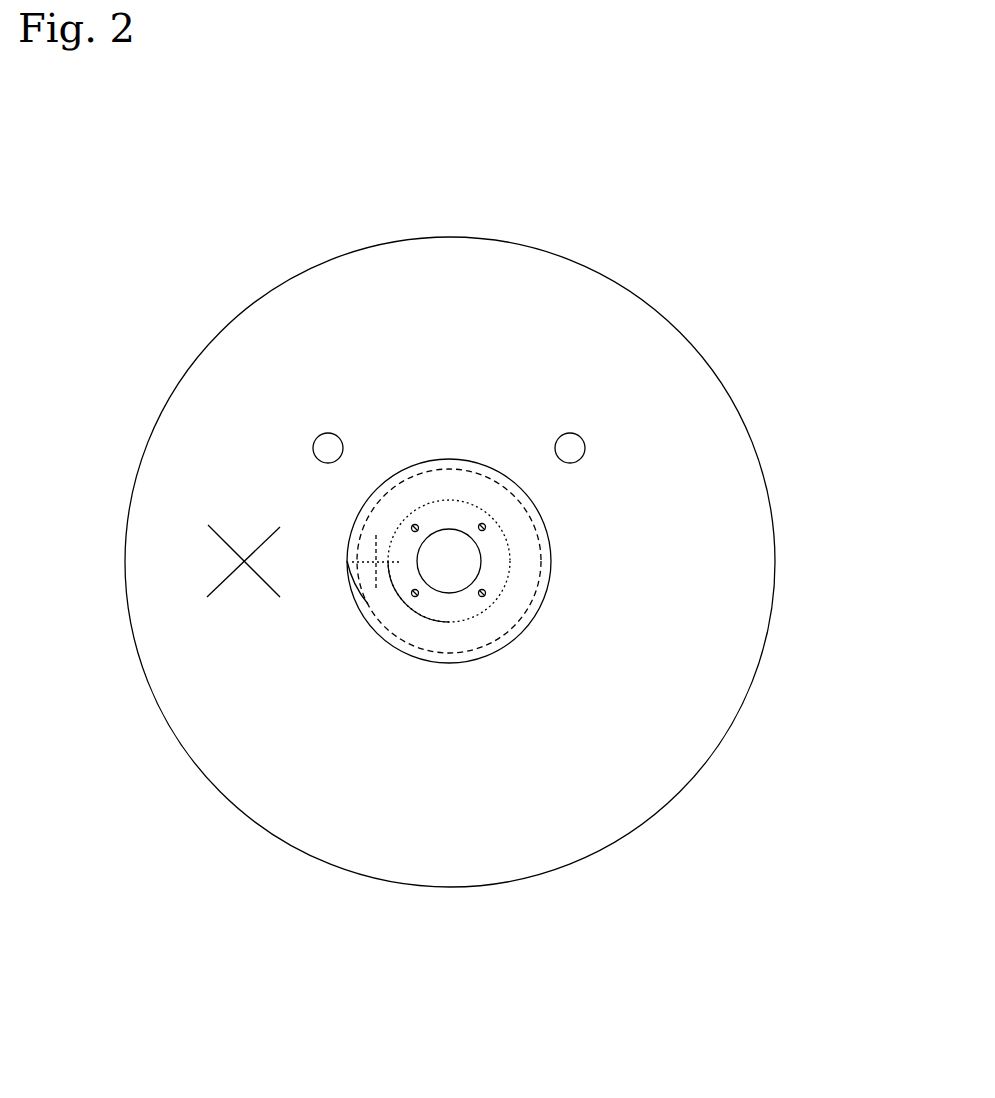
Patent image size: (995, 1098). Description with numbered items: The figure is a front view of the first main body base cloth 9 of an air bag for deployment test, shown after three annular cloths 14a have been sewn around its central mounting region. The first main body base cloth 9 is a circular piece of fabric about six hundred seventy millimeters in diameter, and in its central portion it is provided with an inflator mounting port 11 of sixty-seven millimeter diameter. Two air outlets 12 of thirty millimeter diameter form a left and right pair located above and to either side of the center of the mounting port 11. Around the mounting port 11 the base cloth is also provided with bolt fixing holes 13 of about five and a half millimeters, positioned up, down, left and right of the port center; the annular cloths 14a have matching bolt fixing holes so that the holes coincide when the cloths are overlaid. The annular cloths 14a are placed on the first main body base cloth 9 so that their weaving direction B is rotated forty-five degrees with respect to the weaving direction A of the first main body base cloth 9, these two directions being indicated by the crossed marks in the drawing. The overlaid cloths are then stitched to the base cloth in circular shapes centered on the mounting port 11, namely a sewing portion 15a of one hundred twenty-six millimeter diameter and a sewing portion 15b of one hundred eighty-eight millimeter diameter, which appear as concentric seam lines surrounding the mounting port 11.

The first main body base cloth 9 is at (443, 347).
The inflator mounting port 11 is at (450, 563).
The air outlet 12 is at (568, 433).
The bolt fixing hole 13 is at (482, 593).
The annular cloth 14a is at (547, 517).
The sewing portion 15a is at (440, 623).
The sewing portion 15b is at (367, 605).
The weaving direction of first main body base cloth A is at (248, 537).
The weaving direction of annular cloth B is at (375, 523).